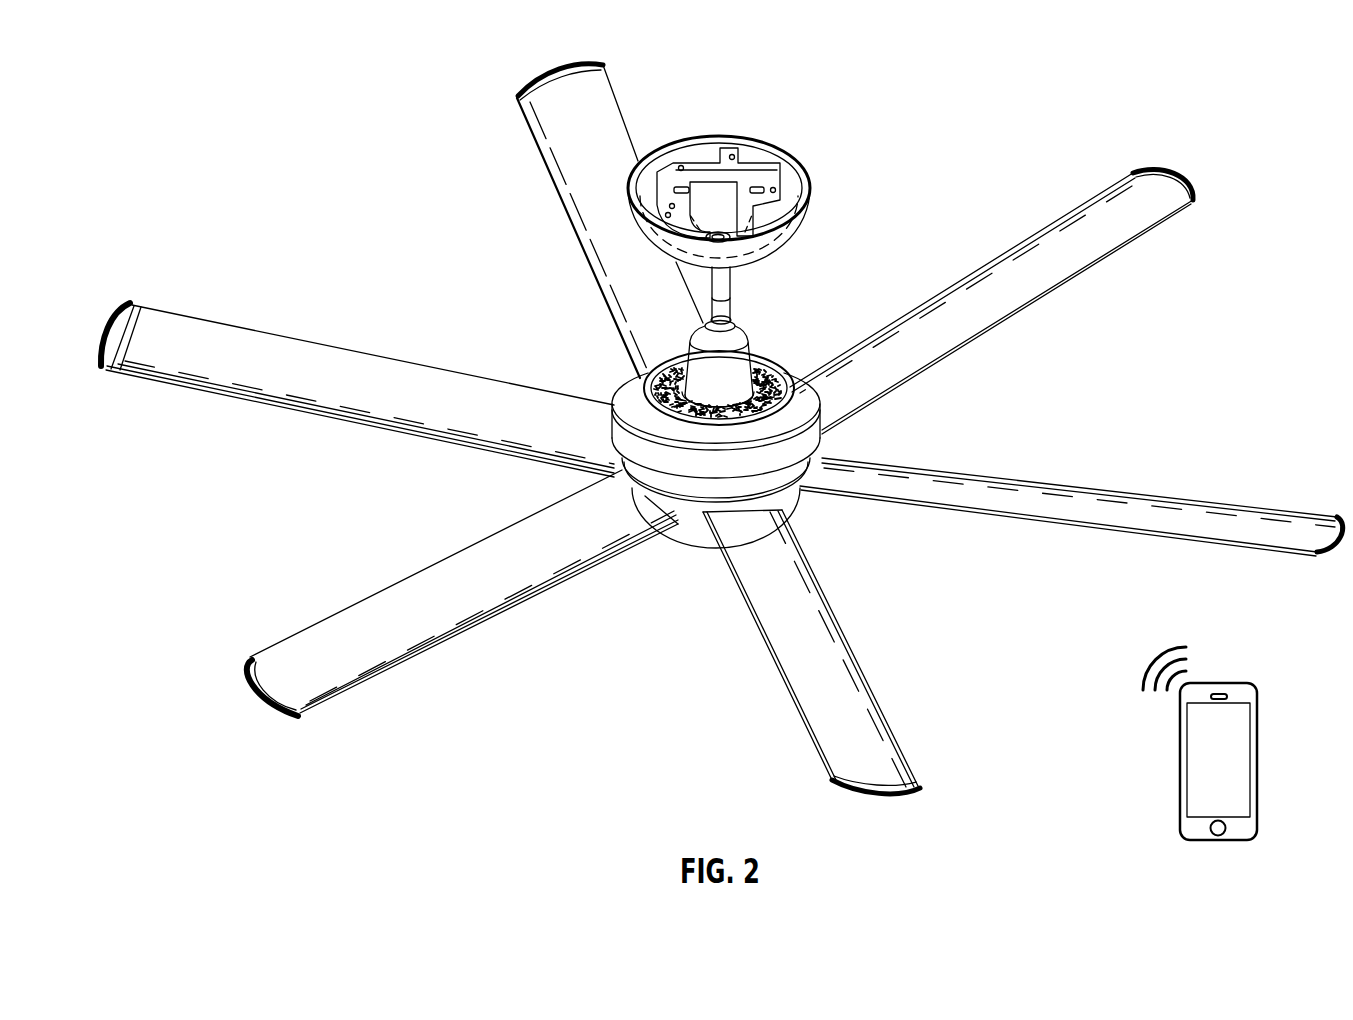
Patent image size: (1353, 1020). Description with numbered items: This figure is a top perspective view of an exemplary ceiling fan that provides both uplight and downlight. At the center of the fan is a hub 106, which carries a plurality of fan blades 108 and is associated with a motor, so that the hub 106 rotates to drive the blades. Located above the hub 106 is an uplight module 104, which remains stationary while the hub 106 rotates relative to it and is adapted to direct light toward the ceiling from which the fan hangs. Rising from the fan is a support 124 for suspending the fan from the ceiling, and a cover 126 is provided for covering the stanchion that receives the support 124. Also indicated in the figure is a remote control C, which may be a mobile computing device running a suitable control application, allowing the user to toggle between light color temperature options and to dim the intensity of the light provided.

The uplight module 104 is at (786, 342).
The hub 106 is at (794, 503).
The fan blades 108 is at (1047, 267).
The support 124 is at (732, 293).
The cover 126 is at (706, 381).
The remote control C is at (1257, 755).